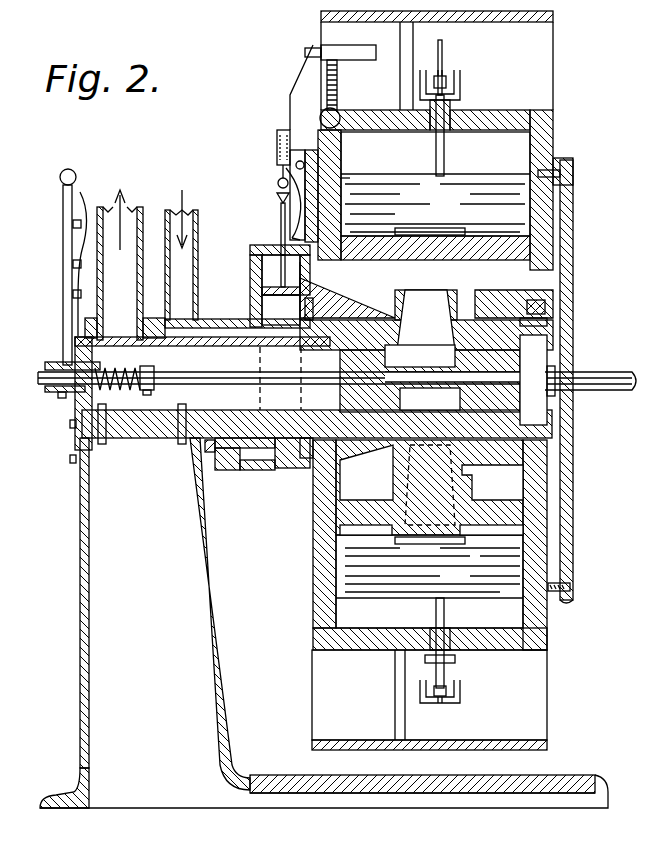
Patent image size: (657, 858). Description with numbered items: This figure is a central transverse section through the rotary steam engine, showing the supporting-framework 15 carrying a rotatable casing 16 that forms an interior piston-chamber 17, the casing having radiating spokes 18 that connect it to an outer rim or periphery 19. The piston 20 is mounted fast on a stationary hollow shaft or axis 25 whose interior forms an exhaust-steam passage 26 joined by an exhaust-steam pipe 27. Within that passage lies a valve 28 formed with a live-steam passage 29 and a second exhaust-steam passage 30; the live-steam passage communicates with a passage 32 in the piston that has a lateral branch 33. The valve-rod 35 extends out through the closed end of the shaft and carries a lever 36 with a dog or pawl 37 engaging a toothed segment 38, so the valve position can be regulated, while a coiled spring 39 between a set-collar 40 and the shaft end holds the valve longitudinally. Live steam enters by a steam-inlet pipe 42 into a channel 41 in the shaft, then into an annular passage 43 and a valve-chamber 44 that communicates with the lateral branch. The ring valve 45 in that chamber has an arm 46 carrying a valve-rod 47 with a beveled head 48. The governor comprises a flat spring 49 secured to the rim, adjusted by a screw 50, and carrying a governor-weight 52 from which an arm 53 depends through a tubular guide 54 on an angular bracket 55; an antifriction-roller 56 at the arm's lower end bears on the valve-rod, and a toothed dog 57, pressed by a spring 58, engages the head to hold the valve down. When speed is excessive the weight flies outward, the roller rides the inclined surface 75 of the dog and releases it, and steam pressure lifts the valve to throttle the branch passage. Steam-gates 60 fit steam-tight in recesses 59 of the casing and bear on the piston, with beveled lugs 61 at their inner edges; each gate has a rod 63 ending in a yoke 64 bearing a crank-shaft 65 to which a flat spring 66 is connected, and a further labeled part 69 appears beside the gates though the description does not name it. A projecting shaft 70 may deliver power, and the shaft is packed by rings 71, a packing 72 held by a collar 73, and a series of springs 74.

The supporting-framework 15 is at (232, 714).
The casing 16 is at (548, 632).
The piston-chamber 17 is at (435, 190).
The spokes 18 is at (406, 40).
The outer rim or periphery 19 is at (545, 750).
The piston 20 is at (480, 525).
The shaft or axis 25 is at (155, 426).
The exhaust-steam passage 26 is at (279, 385).
The exhaust-steam pipe 27 is at (140, 215).
The valve 28 is at (478, 374).
The live-steam passage 29 is at (432, 378).
The exhaust-steam passage 30 is at (430, 399).
The passage 32 is at (426, 407).
The lateral branch 33 is at (426, 306).
The valve-rod 35 is at (200, 372).
The lever 36 is at (62, 282).
The dog or pawl 37 is at (84, 230).
The toothed segment 38 is at (80, 360).
The coiled spring 39 is at (115, 368).
The set-collar 40 is at (150, 368).
The longitudinal passage or channel 41 is at (210, 320).
The steam-inlet pipe 42 is at (186, 252).
The annular passage 43 is at (270, 452).
The valve-chamber 44 is at (262, 260).
The valve 45 is at (281, 306).
The arm 46 is at (310, 298).
The valve-rod 47 is at (281, 226).
The beveled enlargement or head 48 is at (277, 196).
The flat spring 49 is at (338, 80).
The screw 50 is at (322, 108).
The governor-weight 52 is at (368, 45).
The arm 53 is at (298, 76).
The tubular guide 54 is at (277, 134).
The angular bracket 55 is at (300, 161).
The antifriction-roller 56 is at (278, 183).
The toothed dog 57 is at (305, 196).
The spring 58 is at (326, 190).
The chamber or recess 59 is at (435, 158).
The steam-gate 60 is at (435, 208).
The beveled lugs 61 is at (410, 228).
The rod 63 is at (436, 154).
The yoke-like portion 64 is at (452, 84).
The crank-shaft 65 is at (442, 72).
The flat spring 66 is at (436, 70).
The recess 69 is at (372, 530).
The projecting shaft 70 is at (618, 392).
The ring 71 is at (510, 300).
The packing 72 is at (548, 330).
The collar 73 is at (548, 306).
The springs 74 is at (303, 465).
The inclined surface 75 is at (283, 170).